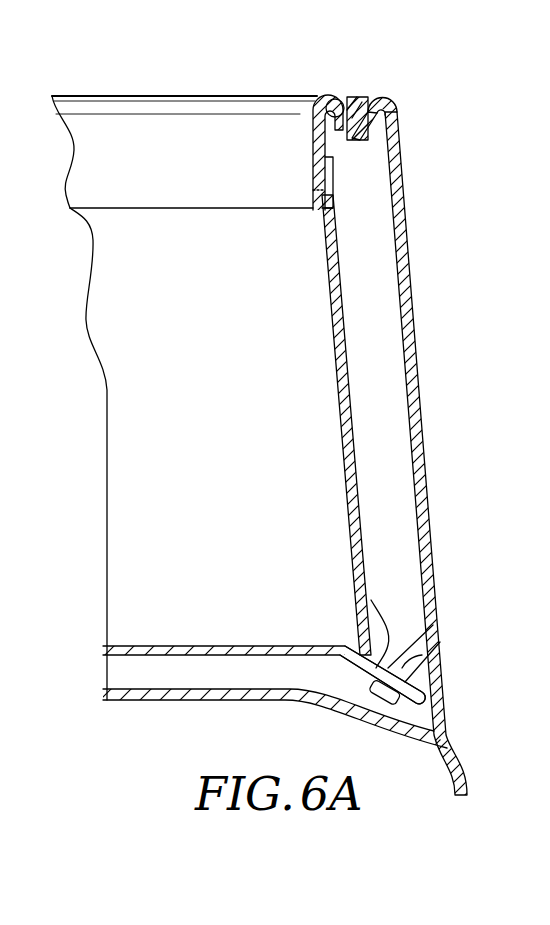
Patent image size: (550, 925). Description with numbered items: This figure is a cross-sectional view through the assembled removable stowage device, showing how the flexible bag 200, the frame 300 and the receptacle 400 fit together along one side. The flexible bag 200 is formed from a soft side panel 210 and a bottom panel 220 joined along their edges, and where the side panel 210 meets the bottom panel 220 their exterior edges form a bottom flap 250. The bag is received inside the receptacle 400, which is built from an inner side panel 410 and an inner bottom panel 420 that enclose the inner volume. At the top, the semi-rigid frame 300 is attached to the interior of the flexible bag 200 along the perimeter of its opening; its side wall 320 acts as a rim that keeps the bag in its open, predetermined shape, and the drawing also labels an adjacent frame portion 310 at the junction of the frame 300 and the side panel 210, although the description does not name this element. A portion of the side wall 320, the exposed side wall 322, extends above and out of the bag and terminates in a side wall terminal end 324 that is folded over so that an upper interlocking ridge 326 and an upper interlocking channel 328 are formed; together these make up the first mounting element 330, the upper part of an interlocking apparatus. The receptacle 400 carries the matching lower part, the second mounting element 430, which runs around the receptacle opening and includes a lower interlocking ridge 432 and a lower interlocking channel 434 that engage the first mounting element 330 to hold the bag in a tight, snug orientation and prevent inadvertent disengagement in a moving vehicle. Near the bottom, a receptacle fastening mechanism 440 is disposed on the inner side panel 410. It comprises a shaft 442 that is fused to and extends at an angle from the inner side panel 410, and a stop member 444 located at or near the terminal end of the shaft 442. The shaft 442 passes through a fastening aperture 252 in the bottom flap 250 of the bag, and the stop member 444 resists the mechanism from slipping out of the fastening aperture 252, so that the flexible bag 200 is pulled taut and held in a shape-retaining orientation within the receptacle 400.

The flexible bag 200 is at (220, 381).
The side panel 210 is at (338, 355).
The bottom panel 220 is at (180, 646).
The bottom flap 250 is at (380, 660).
The fastening aperture 252 is at (366, 676).
The frame 300 is at (327, 148).
The wall upper portion 310 is at (320, 213).
The side wall 320 is at (323, 170).
The exposed side wall 322 is at (315, 126).
The side wall terminal end 324 is at (345, 138).
The upper interlocking ridge 326 is at (354, 118).
The upper interlocking channel 328 is at (350, 108).
The first mounting element 330 is at (331, 100).
The receptacle 400 is at (319, 420).
The inner side panel 410 is at (407, 285).
The inner bottom panel 420 is at (283, 702).
The second mounting element 430 is at (390, 104).
The lower interlocking ridge 432 is at (328, 100).
The lower interlocking channel 434 is at (385, 118).
The receptacle fastening mechanism 440 is at (410, 657).
The shaft 442 is at (412, 668).
The stop member 444 is at (414, 692).